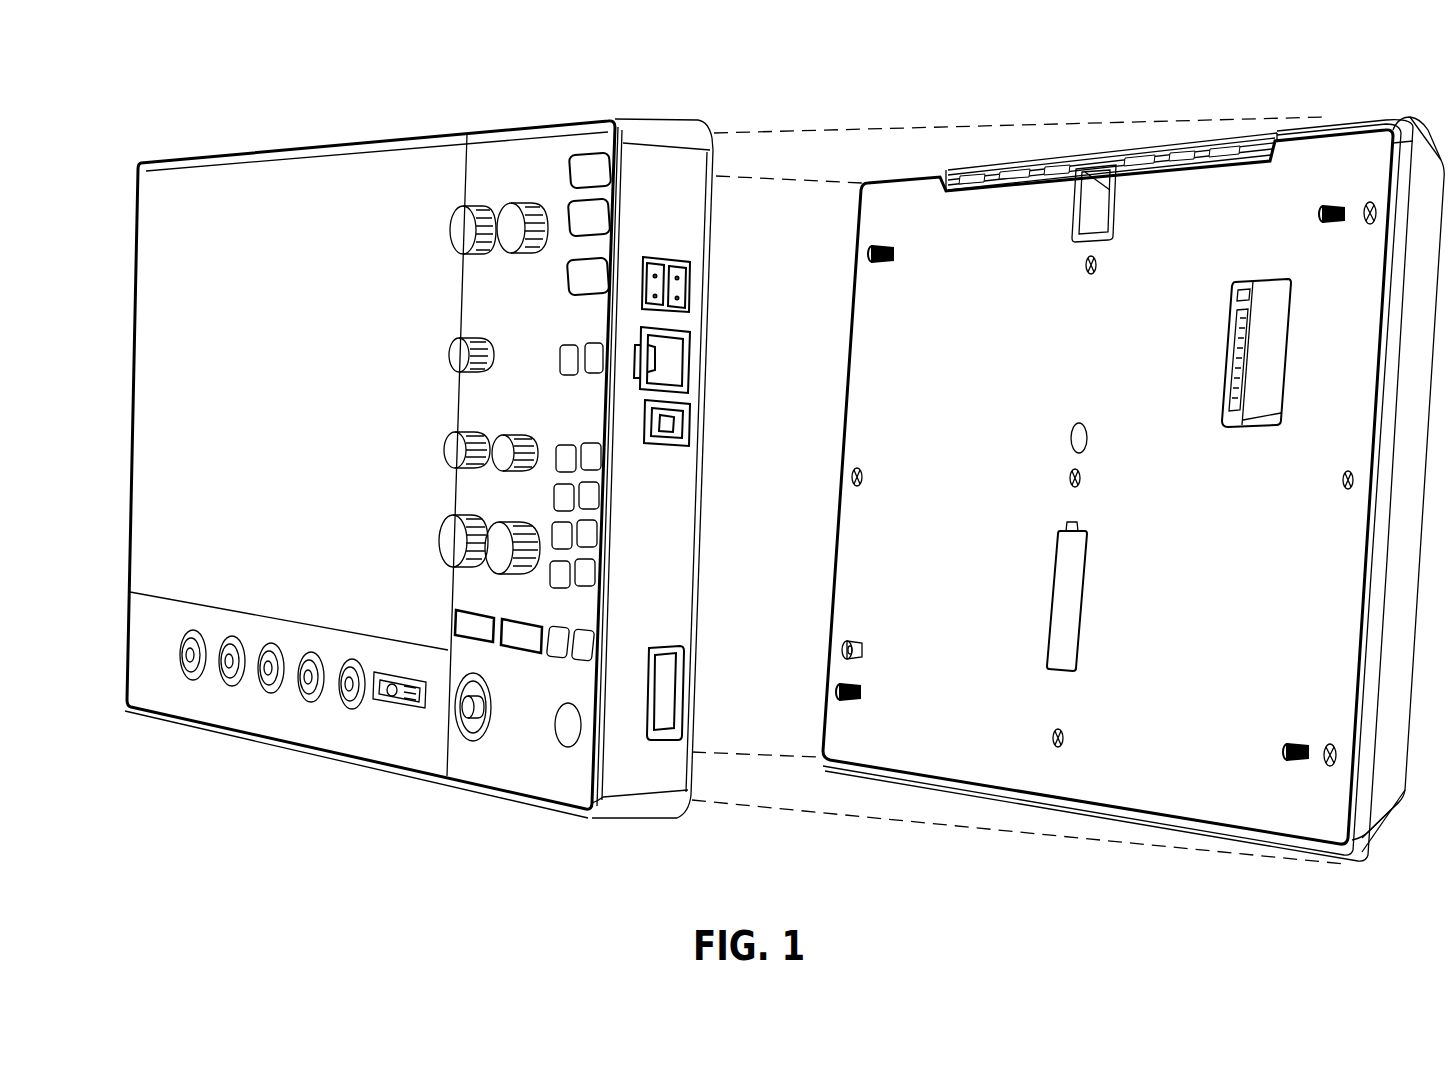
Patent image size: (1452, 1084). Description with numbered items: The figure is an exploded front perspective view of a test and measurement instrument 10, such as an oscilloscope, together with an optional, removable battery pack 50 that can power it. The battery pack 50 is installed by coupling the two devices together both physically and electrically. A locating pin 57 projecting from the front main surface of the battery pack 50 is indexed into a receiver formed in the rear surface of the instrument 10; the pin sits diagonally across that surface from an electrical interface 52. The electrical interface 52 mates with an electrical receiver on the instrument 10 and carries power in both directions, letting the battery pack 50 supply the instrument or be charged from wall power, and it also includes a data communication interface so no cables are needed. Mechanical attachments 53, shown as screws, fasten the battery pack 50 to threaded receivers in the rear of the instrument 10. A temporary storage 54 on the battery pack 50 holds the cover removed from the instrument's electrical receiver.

The test and measurement instrument 10 is at (392, 137).
The removable battery pack 50 is at (1326, 122).
The electrical interface 52 is at (1275, 330).
The mechanical attachments 53 is at (893, 252).
The temporary storage 54 is at (1062, 615).
The locating pin 57 is at (864, 648).